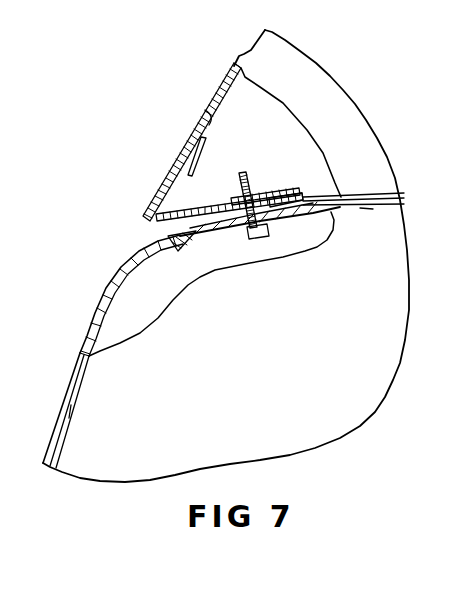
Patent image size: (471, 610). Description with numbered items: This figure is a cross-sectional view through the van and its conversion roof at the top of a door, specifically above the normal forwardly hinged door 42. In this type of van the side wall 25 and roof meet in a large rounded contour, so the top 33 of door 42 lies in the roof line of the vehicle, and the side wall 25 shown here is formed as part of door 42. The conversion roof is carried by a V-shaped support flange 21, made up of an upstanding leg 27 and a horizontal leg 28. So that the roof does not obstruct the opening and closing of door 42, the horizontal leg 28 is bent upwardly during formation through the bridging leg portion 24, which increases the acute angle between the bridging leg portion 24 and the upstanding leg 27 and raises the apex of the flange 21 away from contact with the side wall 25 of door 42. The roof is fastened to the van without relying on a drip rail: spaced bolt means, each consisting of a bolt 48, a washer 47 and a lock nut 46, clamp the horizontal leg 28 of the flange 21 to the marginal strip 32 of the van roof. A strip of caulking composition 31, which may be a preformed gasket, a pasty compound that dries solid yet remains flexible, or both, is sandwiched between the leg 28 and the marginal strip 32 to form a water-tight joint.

The flange 21 is at (186, 168).
The bridging leg portion 24 is at (177, 214).
The side wall 25 is at (107, 286).
The upstanding leg 27 is at (189, 135).
The horizontal leg 28 is at (287, 190).
The caulking composition 31 is at (303, 200).
The marginal strip 32 is at (324, 214).
The top 33 is at (173, 233).
The forwardly hinged door 42 is at (88, 332).
The lock nut 46 is at (240, 176).
The washer 47 is at (262, 193).
The bolt 48 is at (253, 240).